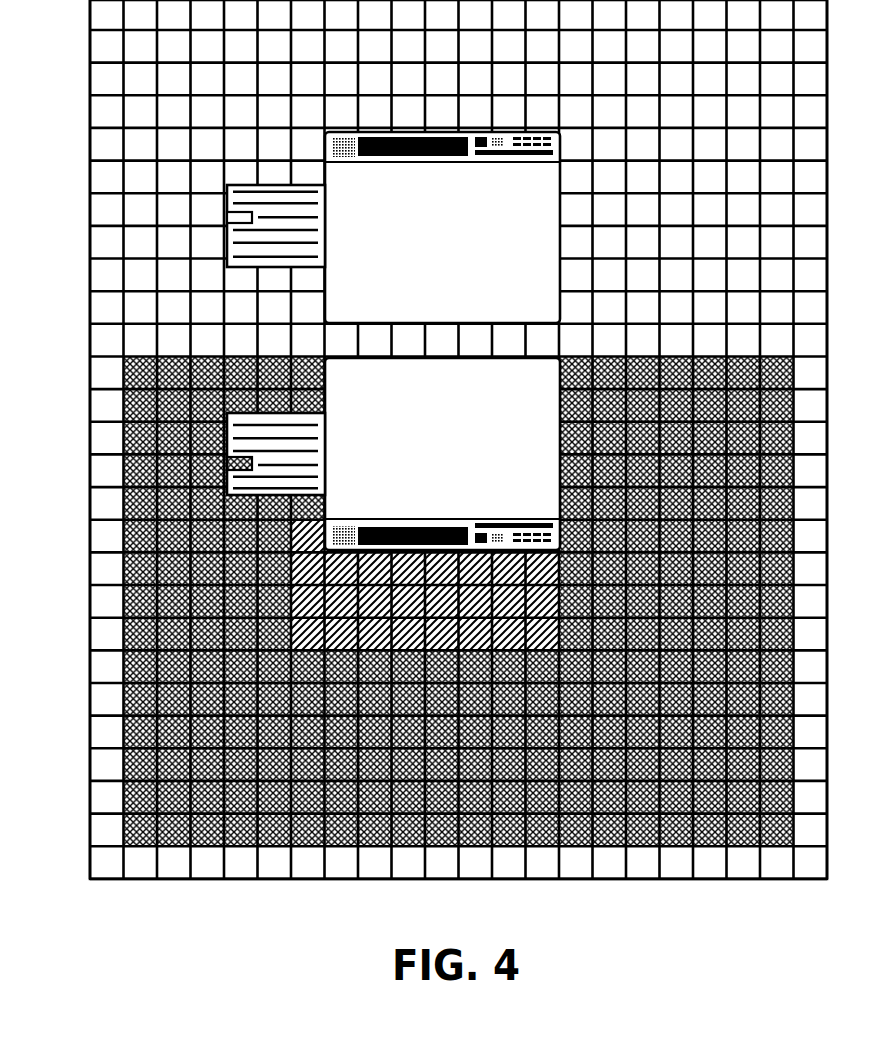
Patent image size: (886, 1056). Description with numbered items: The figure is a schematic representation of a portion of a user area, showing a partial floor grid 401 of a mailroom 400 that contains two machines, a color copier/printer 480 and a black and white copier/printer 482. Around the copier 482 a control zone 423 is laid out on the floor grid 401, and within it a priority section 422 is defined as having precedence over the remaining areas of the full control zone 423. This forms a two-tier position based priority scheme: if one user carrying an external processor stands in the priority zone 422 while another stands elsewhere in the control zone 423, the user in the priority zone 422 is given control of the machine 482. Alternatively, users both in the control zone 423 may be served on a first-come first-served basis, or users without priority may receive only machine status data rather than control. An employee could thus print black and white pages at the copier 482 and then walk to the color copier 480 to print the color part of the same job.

The mailroom 400 is at (191, 896).
The partial floor grid 401 is at (108, 733).
The priority section 422 is at (340, 600).
The control zone 423 is at (137, 665).
The color copier/printer 480 is at (447, 249).
The black and white copier/printer 482 is at (465, 451).